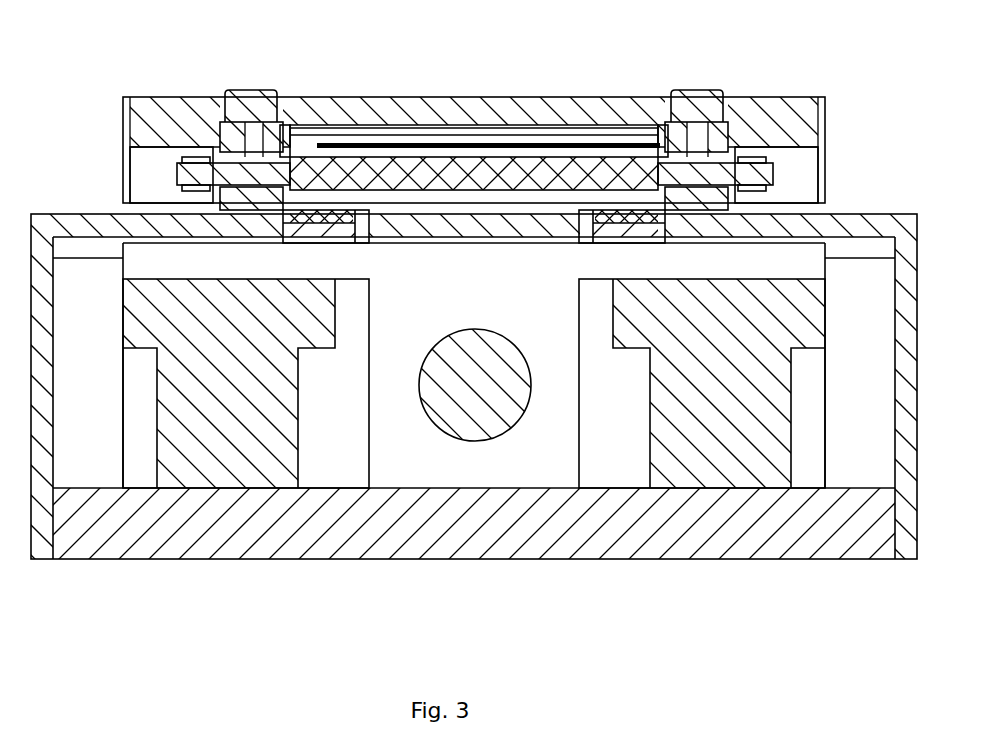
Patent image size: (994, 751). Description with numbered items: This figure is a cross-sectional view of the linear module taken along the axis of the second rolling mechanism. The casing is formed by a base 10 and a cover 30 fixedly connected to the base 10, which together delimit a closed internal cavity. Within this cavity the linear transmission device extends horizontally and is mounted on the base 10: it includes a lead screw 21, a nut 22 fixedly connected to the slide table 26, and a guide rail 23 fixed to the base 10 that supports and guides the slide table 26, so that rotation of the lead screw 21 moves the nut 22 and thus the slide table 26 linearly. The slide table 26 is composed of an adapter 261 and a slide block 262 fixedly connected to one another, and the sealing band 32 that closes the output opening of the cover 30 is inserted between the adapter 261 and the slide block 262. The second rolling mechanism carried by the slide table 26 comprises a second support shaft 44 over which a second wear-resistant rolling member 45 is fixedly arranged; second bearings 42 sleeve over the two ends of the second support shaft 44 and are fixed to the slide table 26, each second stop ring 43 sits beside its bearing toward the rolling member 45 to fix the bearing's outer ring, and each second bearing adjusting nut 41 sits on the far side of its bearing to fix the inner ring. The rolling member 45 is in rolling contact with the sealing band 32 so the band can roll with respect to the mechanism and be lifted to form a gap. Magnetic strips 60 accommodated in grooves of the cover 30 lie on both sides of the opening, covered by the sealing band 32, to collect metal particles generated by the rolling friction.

The base 10 is at (568, 490).
The lead screw 21 is at (490, 395).
The nut 22 is at (405, 395).
The guide rail 23 is at (232, 392).
The slide table 26 is at (493, 143).
The adapter 261 is at (708, 133).
The slide block 262 is at (440, 120).
The cover 30 is at (905, 490).
The sealing band 32 is at (350, 147).
The second bearing adjusting nut 41 is at (198, 160).
The second bearing 42 is at (217, 157).
The second stop ring 43 is at (238, 157).
The second support shaft 44 is at (257, 175).
The second wear-resistant rolling member 45 is at (308, 155).
The magnetic strip 60 is at (340, 218).